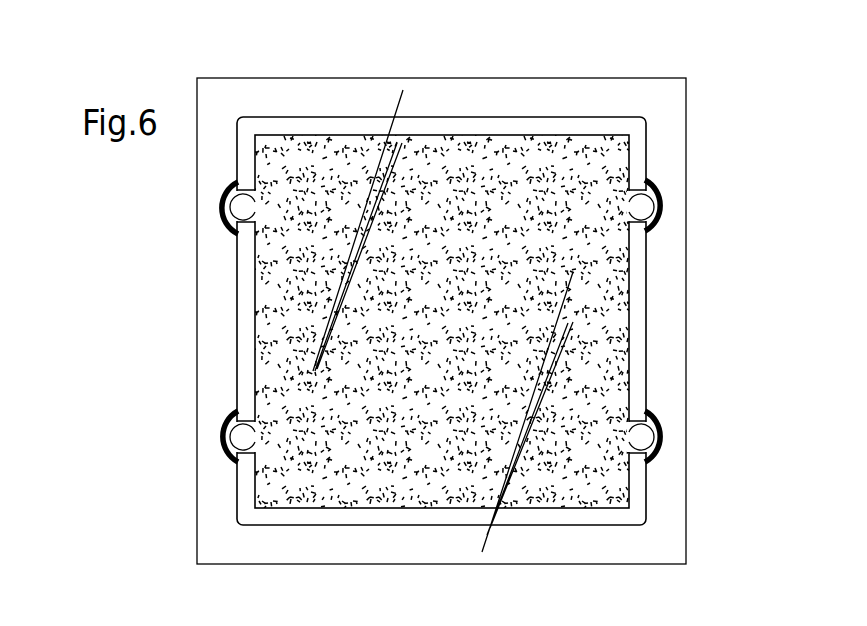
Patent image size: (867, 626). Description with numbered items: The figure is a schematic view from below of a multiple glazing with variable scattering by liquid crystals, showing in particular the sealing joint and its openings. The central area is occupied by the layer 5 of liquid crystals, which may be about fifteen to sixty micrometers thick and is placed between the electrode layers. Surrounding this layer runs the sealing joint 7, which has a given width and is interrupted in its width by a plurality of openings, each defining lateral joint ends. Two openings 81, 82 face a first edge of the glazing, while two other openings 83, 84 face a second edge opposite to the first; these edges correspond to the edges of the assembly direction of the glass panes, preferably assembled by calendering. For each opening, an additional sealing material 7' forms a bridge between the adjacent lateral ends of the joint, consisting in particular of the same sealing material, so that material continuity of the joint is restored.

The layer of liquid crystals 5 is at (532, 168).
The sealing joint 7 is at (451, 322).
The additional sealing material 7' is at (445, 315).
The opening 81 is at (233, 212).
The opening 82 is at (225, 437).
The opening 83 is at (660, 215).
The opening 84 is at (662, 446).